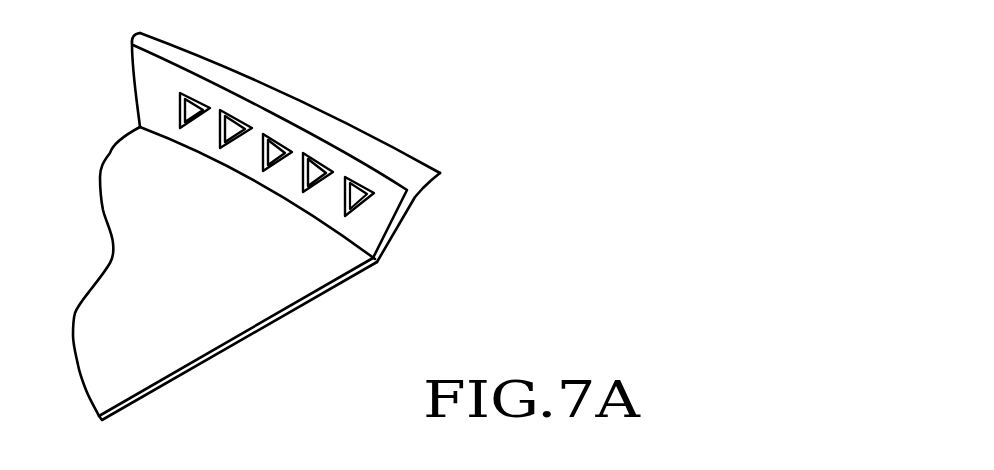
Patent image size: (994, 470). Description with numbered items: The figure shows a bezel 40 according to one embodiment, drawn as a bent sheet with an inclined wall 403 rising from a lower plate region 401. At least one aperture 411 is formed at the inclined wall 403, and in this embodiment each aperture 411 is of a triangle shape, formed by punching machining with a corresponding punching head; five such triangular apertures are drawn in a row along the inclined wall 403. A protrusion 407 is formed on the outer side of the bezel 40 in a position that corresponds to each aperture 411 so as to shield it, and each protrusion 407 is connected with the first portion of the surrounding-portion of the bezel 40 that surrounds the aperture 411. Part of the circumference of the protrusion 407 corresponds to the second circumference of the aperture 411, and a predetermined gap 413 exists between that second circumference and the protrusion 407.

The bezel 40 is at (343, 226).
The base plate 401 is at (200, 345).
The inclined wall 403 is at (378, 151).
The protrusion 407 is at (273, 134).
The aperture 411 is at (355, 214).
The predetermined gap 413 is at (340, 200).